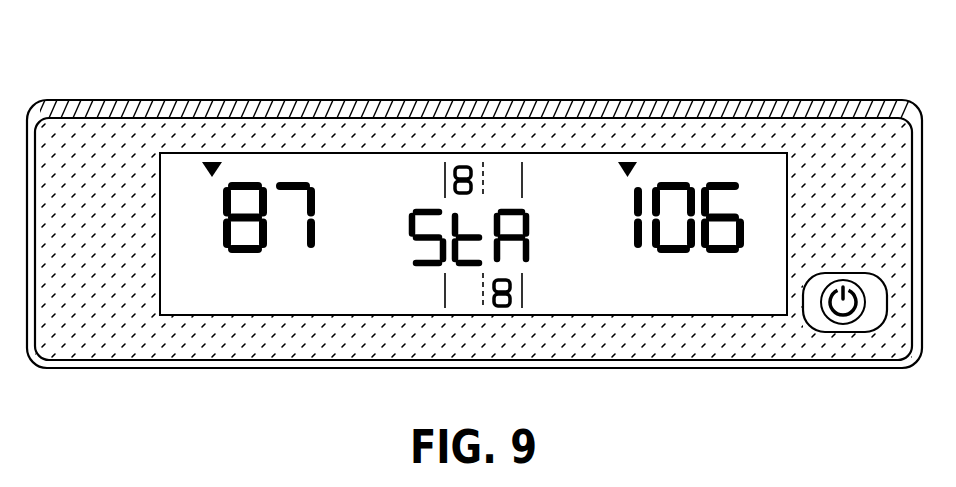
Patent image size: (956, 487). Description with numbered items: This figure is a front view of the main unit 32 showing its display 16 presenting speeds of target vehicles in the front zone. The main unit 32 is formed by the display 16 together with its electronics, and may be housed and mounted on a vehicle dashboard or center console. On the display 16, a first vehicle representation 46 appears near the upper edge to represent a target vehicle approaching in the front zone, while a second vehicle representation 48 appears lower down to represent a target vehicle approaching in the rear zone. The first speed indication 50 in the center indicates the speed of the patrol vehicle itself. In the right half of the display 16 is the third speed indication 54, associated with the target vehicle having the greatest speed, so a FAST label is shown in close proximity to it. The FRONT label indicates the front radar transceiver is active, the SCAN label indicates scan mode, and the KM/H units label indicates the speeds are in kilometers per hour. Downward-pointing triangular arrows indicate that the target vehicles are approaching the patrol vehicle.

The display 16 is at (263, 165).
The main unit 32 is at (493, 52).
The first vehicle representation 46 is at (463, 157).
The second vehicle representation 48 is at (505, 315).
The first speed indication 50 is at (535, 205).
The third speed indication 54 is at (710, 167).